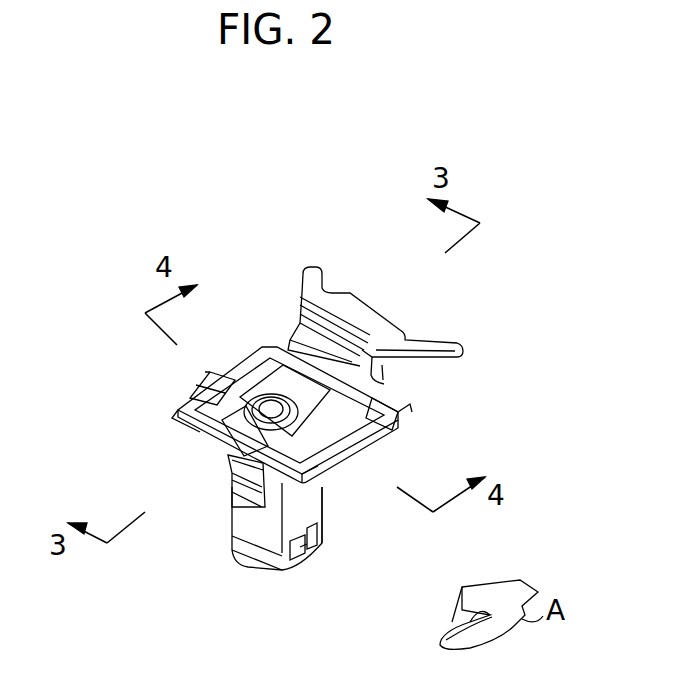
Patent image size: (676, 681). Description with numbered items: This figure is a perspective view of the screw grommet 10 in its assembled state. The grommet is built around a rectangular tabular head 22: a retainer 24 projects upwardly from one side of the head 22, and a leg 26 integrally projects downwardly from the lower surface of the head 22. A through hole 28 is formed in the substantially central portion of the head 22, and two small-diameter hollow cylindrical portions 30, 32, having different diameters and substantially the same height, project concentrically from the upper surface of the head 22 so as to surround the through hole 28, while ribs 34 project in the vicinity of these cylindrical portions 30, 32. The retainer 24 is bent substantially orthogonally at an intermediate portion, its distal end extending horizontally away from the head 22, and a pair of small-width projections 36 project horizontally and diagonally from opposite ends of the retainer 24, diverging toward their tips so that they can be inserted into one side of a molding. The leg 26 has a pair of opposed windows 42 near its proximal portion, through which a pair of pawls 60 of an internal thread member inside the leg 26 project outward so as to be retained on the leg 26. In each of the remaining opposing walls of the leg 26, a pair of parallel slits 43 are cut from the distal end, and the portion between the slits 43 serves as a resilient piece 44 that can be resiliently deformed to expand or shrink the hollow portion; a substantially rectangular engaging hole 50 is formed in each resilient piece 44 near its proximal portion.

The screw grommet 10 is at (502, 430).
The head 22 is at (398, 438).
The retainer 24 is at (360, 320).
The leg 26 is at (242, 523).
The through hole 28 is at (270, 408).
The small-diameter hollow cylindrical portion 30 is at (208, 428).
The small-diameter hollow cylindrical portion 32 is at (240, 437).
The ribs 34 is at (248, 358).
The projections 36 is at (305, 268).
The windows 42 is at (322, 495).
The slits 43 is at (307, 552).
The resilient piece 44 is at (298, 548).
The engaging hole 50 is at (290, 545).
The pawls 60 is at (232, 473).